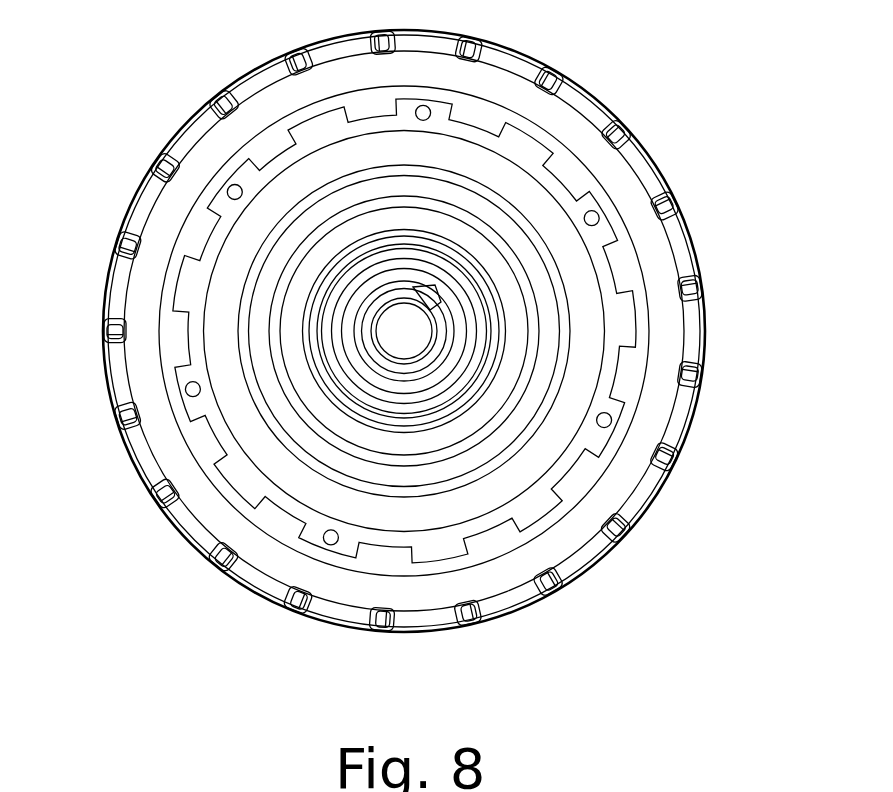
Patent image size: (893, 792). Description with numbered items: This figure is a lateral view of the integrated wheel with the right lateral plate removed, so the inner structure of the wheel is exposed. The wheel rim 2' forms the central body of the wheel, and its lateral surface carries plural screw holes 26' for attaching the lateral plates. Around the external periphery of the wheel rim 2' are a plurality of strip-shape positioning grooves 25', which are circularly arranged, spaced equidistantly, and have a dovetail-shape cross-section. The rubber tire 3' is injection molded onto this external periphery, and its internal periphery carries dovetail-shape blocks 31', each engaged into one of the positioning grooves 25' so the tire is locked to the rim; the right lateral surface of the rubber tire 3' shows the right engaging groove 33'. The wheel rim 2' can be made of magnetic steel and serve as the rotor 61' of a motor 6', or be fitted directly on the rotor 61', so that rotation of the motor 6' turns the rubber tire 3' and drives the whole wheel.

The screw holes 26' is at (158, 149).
The rubber tire 3' is at (378, 331).
The wheel rim 2' is at (333, 331).
The motor 6' is at (348, 340).
The right engaging groove 33' is at (475, 331).
The strip-shape positioning grooves 25' is at (527, 331).
The dovetail-shape blocks 31' is at (523, 331).
The rotor 61' is at (470, 379).